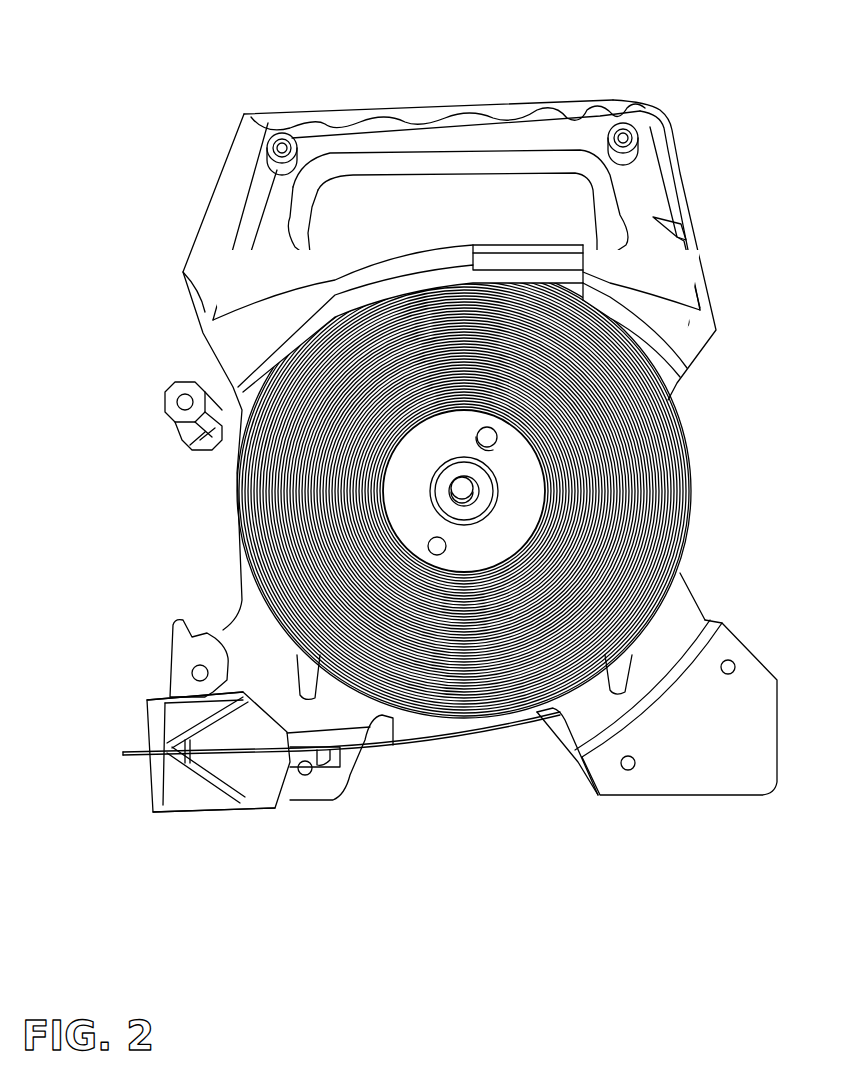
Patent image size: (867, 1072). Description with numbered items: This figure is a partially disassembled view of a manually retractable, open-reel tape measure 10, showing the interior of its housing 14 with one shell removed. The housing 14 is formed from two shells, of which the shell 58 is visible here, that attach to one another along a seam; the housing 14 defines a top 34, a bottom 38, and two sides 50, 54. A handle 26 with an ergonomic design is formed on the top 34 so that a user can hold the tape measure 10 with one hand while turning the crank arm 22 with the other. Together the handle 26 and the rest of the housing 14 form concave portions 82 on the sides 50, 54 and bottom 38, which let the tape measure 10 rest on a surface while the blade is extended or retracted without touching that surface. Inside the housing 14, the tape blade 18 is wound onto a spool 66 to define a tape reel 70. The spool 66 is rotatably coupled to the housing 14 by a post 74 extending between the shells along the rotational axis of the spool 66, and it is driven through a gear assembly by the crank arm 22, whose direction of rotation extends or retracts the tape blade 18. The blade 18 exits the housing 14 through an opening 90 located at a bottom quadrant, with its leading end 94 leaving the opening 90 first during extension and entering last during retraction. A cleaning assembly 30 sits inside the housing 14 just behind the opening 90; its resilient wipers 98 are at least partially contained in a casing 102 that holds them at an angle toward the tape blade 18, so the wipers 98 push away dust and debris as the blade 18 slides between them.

The tape measure 10 is at (607, 50).
The housing 14 is at (464, 406).
The tape blade 18 is at (415, 745).
The crank arm 22 is at (165, 395).
The handle 26 is at (412, 104).
The cleaning assembly 30 is at (126, 717).
The top 34 is at (292, 106).
The bottom 38 is at (587, 786).
The side 50 is at (708, 353).
The side 54 is at (163, 641).
The shell 58 is at (225, 200).
The spool 66 is at (513, 483).
The tape reel 70 is at (657, 492).
The post 74 is at (462, 488).
The concave portions 82 is at (213, 548).
The opening 90 is at (180, 698).
The leading end 94 is at (333, 800).
The resilient wipers 98 is at (123, 753).
The casing 102 is at (158, 810).